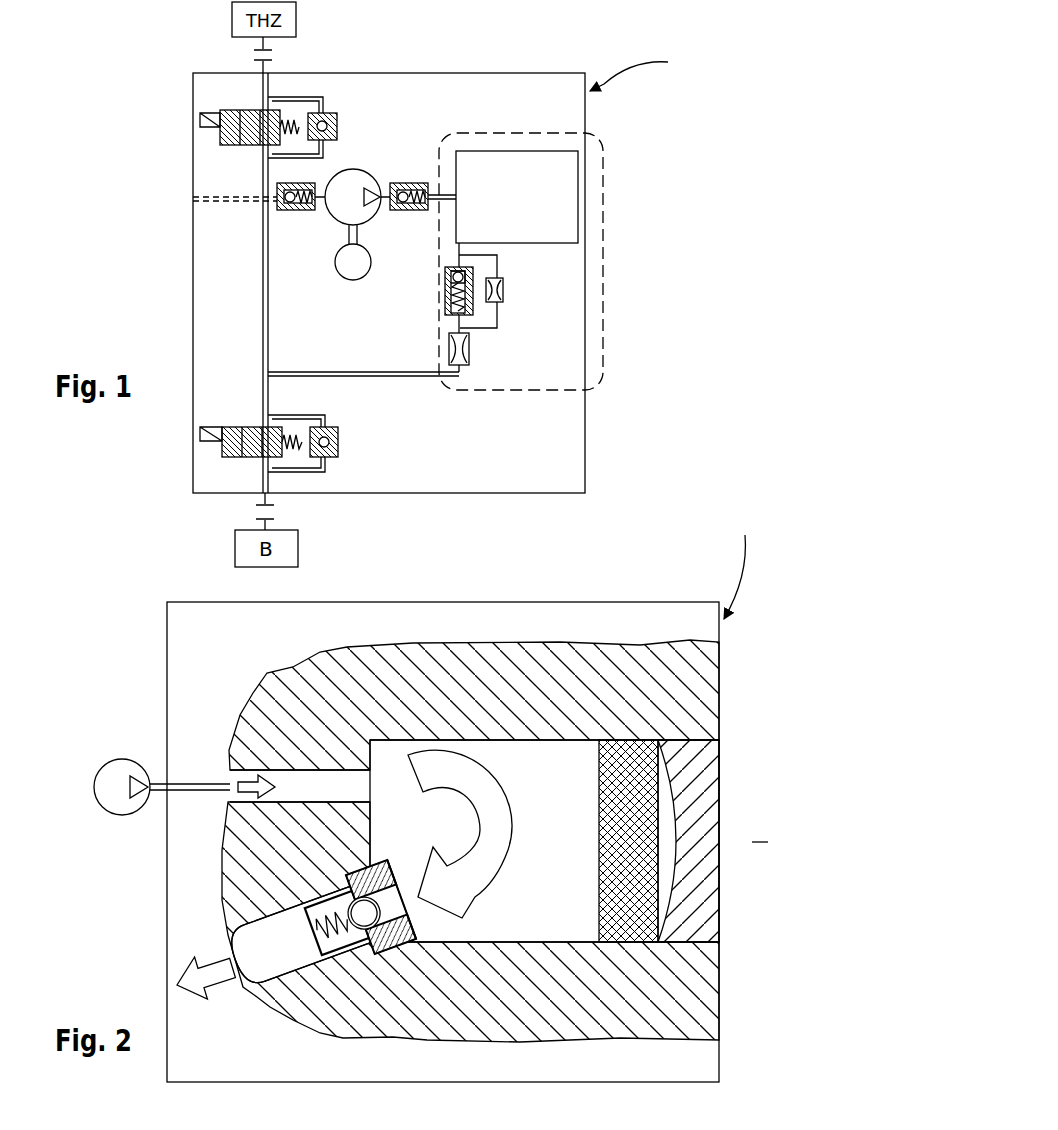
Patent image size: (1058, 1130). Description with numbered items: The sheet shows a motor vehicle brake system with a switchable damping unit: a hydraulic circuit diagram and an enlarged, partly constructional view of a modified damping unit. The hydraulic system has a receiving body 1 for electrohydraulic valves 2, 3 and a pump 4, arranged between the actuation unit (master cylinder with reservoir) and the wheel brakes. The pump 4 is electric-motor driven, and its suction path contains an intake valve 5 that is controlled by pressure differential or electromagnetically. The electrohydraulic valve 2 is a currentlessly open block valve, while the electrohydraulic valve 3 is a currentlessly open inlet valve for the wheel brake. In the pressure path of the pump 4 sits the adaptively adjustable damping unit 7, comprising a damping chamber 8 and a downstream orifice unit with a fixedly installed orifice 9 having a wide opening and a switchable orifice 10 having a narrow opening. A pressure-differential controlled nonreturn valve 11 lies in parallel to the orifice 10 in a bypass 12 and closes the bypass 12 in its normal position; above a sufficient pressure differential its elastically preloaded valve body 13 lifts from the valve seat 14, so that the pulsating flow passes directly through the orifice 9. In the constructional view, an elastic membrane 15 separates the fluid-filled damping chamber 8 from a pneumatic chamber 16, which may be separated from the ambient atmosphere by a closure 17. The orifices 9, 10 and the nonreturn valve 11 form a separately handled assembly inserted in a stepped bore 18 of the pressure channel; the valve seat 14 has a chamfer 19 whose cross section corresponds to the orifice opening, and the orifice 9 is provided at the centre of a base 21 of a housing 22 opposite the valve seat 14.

In FIG. 1, the receiving body 1 is at (563, 113).
In FIG. 2, the receiving body 1 is at (695, 617).
In FIG. 1, the electrohydraulic valve 2 is at (220, 124).
In FIG. 1, the electrohydraulic valve 3 is at (222, 441).
In FIG. 1, the pump 4 is at (337, 214).
In FIG. 2, the pump 4 is at (120, 806).
In FIG. 1, the intake valve 5 is at (277, 192).
In FIG. 1, the damping unit 7 is at (604, 183).
In FIG. 2, the damping unit 7 is at (653, 637).
In FIG. 1, the damping chamber 8 is at (563, 220).
In FIG. 2, the damping chamber 8 is at (563, 927).
In FIG. 1, the orifice 9 is at (479, 362).
In FIG. 2, the orifice 9 is at (276, 990).
In FIG. 1, the orifice 10 is at (515, 301).
In FIG. 2, the orifice 10 is at (379, 945).
In FIG. 1, the nonreturn valve 11 is at (485, 272).
In FIG. 2, the nonreturn valve 11 is at (346, 942).
In FIG. 1, the bypass 12 is at (426, 293).
In FIG. 1, the valve body 13 is at (450, 281).
In FIG. 2, the valve body 13 is at (345, 893).
In FIG. 1, the valve seat 14 is at (452, 271).
In FIG. 2, the valve seat 14 is at (373, 863).
In FIG. 2, the elastic membrane 15 is at (637, 792).
In FIG. 2, the pneumatic chamber 16 is at (667, 872).
In FIG. 2, the closure 17 is at (697, 913).
In FIG. 2, the stepped bore 18 is at (262, 937).
In FIG. 2, the chamfer 19 is at (405, 925).
In FIG. 2, the base 21 is at (301, 940).
In FIG. 2, the housing 22 is at (371, 950).